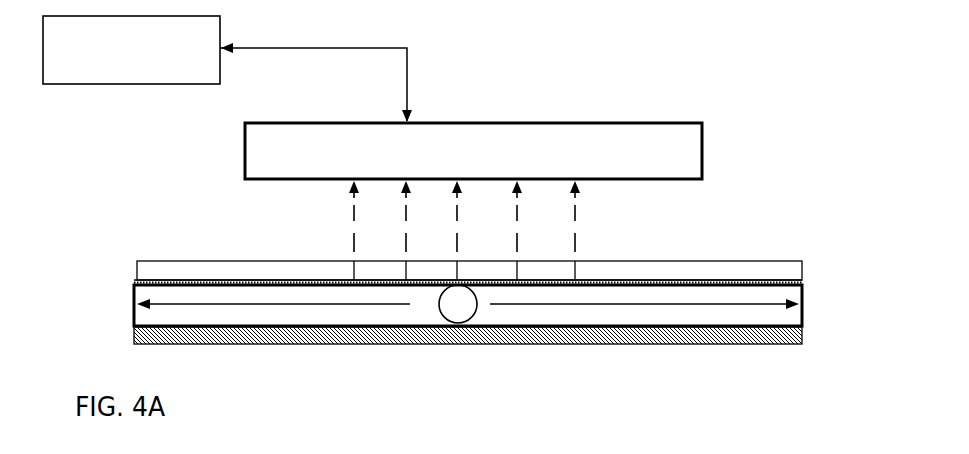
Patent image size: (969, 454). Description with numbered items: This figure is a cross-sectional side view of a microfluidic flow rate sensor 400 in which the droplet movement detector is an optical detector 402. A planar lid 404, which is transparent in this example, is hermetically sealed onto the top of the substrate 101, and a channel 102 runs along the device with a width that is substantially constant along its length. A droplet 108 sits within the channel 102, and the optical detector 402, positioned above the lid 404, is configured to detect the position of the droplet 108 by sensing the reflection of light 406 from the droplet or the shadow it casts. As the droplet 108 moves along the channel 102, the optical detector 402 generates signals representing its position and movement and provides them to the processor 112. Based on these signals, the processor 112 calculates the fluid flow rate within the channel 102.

The microfluidic flow rate sensor 400 is at (770, 162).
The processor 112 is at (117, 73).
The optical detector 402 is at (600, 122).
The light 406 is at (615, 227).
The planar lid 404 is at (287, 260).
The substrate 101 is at (783, 344).
The channel 102 is at (692, 344).
The droplet 108 is at (458, 323).